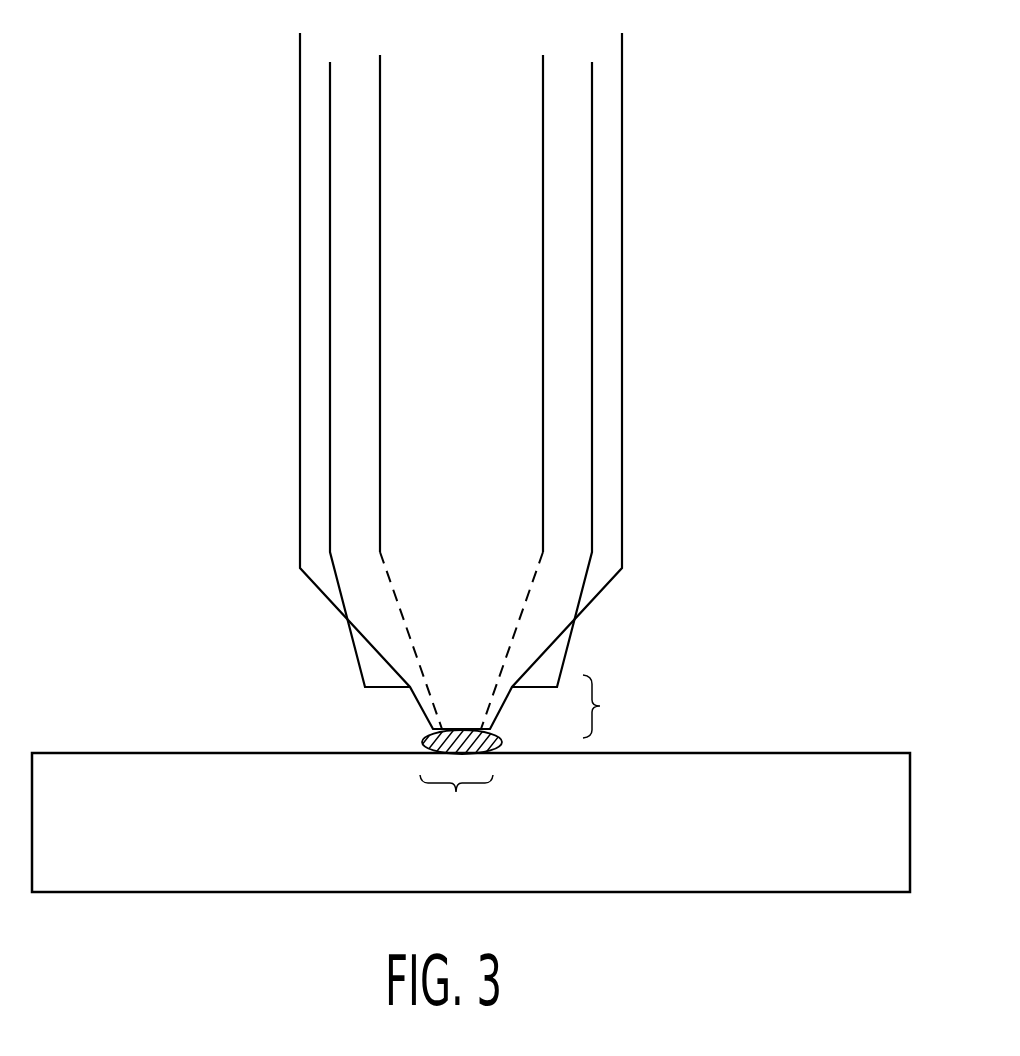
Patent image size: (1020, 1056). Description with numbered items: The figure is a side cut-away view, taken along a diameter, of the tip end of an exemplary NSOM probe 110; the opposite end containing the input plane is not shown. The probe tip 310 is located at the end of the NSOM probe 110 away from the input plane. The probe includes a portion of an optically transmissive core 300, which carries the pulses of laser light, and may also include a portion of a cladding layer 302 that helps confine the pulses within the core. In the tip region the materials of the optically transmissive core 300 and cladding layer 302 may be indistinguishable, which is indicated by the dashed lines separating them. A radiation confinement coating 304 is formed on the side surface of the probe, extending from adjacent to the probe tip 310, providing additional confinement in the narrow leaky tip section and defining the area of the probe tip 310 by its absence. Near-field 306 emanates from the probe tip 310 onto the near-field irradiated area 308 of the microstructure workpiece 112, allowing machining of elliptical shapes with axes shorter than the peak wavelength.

The NSOM probe 110 is at (299, 103).
The microstructure workpiece 112 is at (172, 752).
The optically transmissive core 300 is at (518, 134).
The cladding layer 302 is at (570, 283).
The radiation confinement coating 304 is at (315, 309).
The near-field 306 is at (423, 735).
The near-field irradiated area 308 is at (456, 803).
The probe tip 310 is at (618, 706).